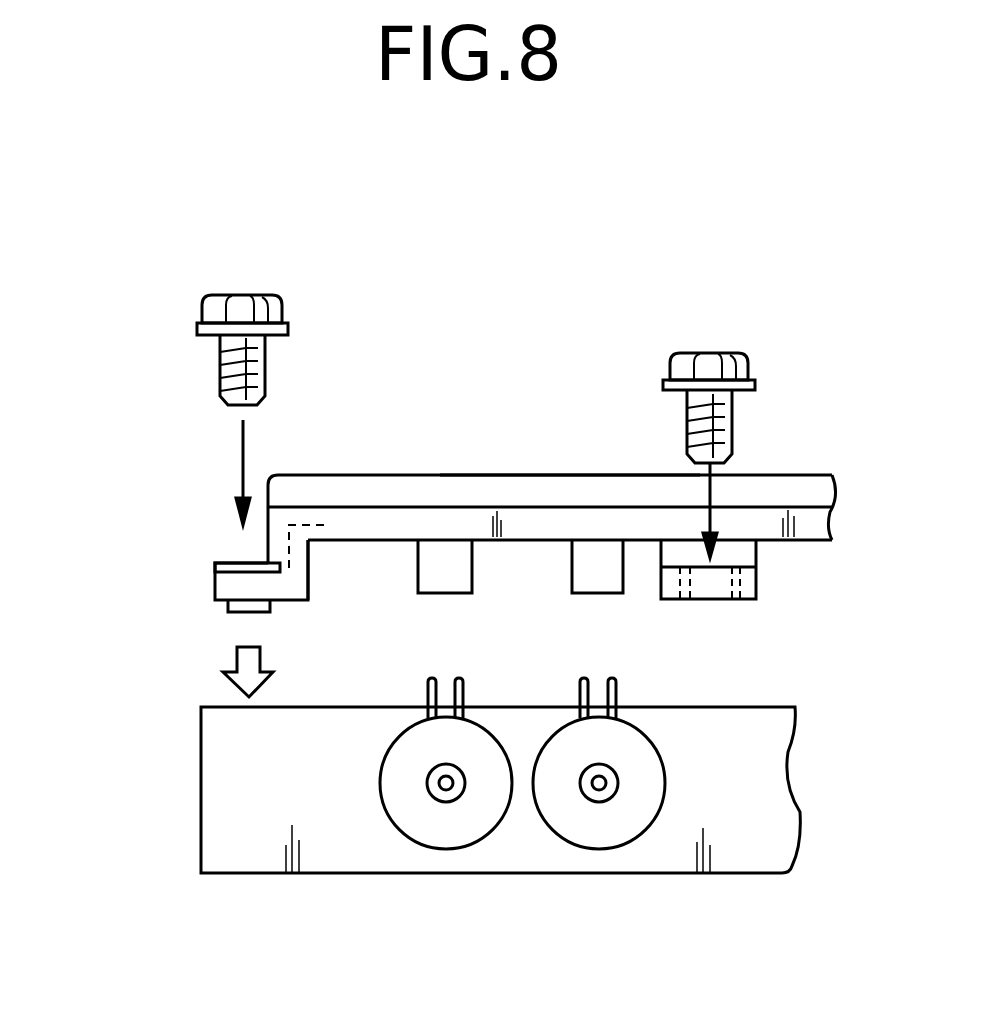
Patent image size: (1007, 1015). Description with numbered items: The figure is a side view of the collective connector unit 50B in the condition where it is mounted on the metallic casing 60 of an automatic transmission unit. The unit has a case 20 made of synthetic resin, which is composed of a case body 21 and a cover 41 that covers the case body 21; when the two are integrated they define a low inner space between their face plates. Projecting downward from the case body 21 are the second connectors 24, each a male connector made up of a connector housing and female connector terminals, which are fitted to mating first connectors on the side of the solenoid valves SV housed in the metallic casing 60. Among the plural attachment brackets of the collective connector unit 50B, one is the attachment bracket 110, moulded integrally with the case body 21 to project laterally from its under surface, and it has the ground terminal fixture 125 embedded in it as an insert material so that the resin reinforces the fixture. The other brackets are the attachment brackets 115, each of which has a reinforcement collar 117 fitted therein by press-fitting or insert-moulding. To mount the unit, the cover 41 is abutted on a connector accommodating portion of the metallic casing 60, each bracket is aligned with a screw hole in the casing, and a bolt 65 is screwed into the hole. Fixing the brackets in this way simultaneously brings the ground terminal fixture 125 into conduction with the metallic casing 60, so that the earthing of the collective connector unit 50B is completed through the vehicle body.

The bolt 65 is at (245, 298).
The case 20 is at (344, 470).
The cover 41 is at (440, 473).
The collective connector unit 50B is at (537, 465).
The case body 21 is at (363, 540).
The attachment bracket 110 is at (198, 590).
The ground terminal fixture 125 is at (216, 565).
The second connector 24 is at (448, 594).
The attachment bracket 115 is at (757, 578).
The reinforcement collar 117 is at (736, 598).
The metallic casing 60 is at (735, 874).
The solenoid valve SV is at (449, 832).